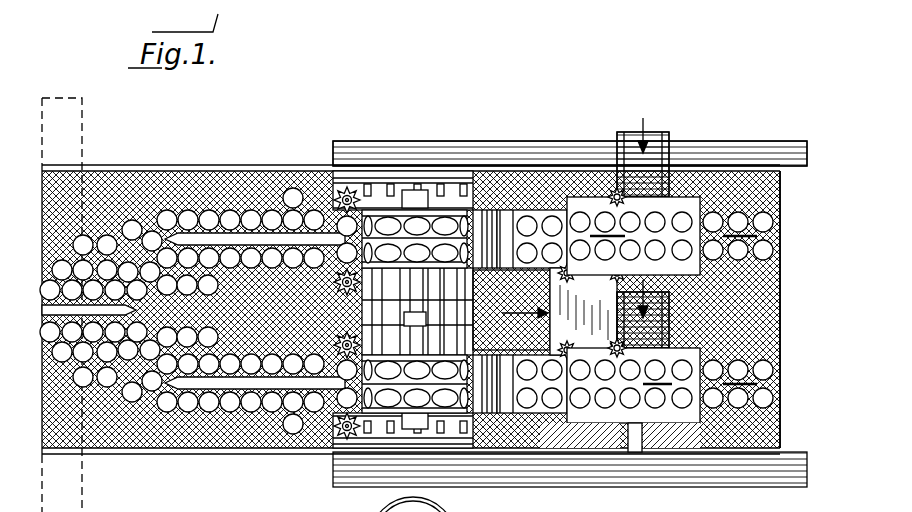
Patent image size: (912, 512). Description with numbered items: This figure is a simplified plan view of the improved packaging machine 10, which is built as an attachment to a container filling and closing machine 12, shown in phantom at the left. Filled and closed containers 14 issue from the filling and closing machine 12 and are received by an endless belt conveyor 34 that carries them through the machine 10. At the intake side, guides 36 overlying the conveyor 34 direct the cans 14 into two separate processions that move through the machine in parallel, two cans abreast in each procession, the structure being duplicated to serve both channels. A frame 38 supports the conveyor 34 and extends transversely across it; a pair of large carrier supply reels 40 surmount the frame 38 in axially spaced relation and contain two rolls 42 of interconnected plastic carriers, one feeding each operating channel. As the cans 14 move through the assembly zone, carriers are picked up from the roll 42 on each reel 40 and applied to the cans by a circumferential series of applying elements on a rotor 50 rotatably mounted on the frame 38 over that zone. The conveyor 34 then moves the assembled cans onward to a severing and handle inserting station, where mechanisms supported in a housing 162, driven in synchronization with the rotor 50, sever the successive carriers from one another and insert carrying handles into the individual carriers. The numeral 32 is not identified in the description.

The machine 10 is at (513, 126).
The container filling and closing machine 12 is at (88, 115).
The containers 14 is at (132, 222).
The feed bar 32 is at (140, 311).
The endless belt conveyor 34 is at (157, 433).
The guides 36 is at (228, 235).
The frame 38 is at (530, 478).
The carrier supply reels 40 is at (377, 207).
The rolls 42 is at (449, 160).
The rotor 50 is at (418, 165).
The housing 162 is at (680, 207).